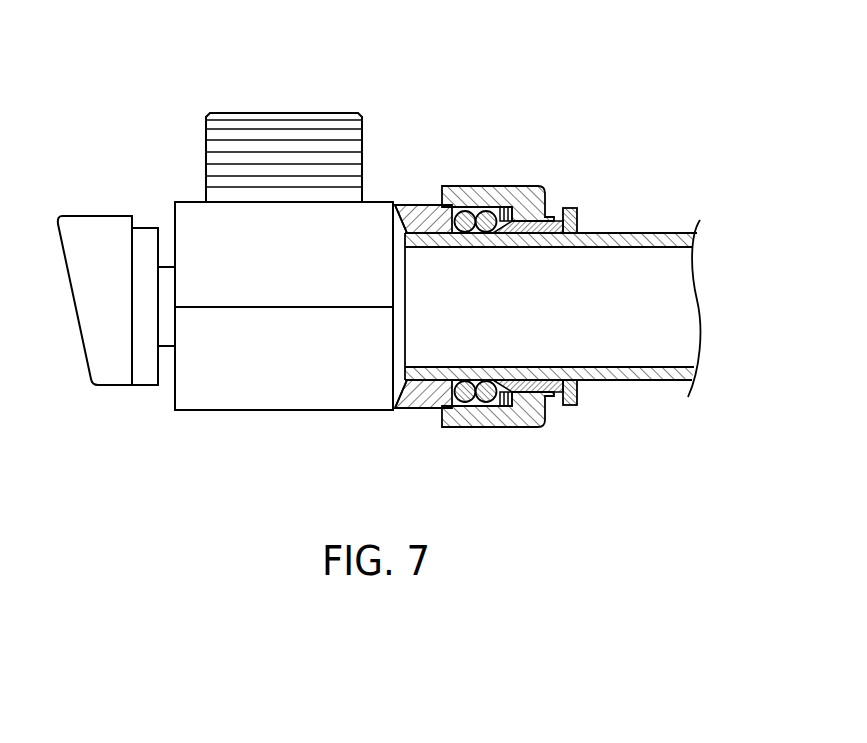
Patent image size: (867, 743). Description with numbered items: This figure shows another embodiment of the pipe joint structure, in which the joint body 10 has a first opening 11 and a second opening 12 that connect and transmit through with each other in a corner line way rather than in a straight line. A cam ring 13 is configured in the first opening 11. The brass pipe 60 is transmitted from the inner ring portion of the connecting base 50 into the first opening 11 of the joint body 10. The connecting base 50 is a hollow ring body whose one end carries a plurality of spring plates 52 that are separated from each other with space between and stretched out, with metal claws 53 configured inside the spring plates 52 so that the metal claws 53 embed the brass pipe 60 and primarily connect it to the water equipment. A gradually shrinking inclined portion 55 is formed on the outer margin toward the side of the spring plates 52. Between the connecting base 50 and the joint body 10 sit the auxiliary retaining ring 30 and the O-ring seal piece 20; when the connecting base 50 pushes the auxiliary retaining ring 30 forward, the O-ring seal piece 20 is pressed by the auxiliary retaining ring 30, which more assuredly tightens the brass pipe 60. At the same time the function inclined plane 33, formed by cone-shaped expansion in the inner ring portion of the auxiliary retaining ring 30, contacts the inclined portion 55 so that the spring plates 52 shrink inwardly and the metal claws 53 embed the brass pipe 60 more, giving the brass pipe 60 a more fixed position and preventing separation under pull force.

The joint body 10 is at (180, 190).
The first opening 11 is at (388, 372).
The second opening 12 is at (276, 112).
The cam ring 13 is at (432, 402).
The O-ring seal piece 20 is at (446, 215).
The auxiliary retaining ring 30 is at (484, 205).
The function inclined plane 33 is at (473, 346).
The connecting base 50 is at (580, 198).
The spring plates 52 is at (545, 410).
The metal claws 53 is at (505, 376).
The inclined portion 55 is at (506, 399).
The brass pipe 60 is at (692, 218).